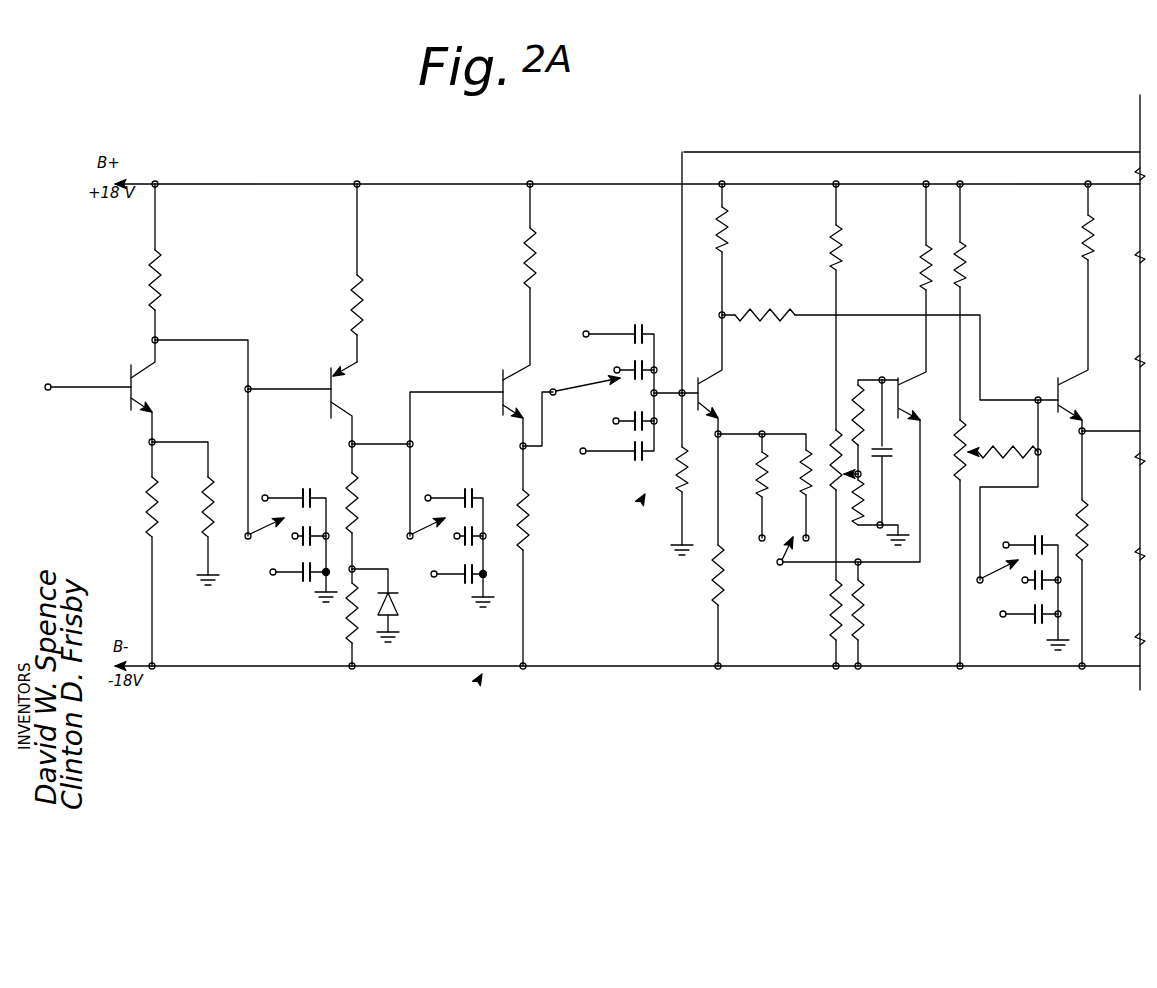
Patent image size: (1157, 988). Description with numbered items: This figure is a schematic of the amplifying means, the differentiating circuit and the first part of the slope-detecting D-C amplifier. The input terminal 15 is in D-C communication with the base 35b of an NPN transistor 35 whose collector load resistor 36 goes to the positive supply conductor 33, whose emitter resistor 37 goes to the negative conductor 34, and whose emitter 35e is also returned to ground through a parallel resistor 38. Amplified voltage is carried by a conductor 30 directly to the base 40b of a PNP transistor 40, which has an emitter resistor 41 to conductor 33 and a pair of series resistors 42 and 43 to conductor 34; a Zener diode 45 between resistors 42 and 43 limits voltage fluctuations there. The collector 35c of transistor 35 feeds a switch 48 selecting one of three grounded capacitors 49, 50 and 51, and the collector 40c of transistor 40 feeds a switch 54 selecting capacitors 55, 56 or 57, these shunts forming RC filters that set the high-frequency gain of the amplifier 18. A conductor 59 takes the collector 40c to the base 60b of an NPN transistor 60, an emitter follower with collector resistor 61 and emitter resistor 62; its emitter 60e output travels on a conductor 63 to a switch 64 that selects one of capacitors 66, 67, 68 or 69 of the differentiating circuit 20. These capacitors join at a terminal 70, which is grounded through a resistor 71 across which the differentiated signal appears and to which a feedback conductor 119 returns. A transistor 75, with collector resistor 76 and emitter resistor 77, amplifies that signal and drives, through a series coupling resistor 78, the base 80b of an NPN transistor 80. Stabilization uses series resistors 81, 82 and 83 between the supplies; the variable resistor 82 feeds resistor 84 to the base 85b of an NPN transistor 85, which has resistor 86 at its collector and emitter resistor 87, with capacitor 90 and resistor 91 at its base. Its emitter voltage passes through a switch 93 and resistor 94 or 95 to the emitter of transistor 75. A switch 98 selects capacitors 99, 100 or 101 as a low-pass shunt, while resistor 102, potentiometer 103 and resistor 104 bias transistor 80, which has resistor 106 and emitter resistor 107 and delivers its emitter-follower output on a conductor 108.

The input terminal 15 is at (48, 383).
The amplifier 18 is at (482, 674).
The differentiating circuit 20 is at (645, 494).
The conductor 30 is at (200, 340).
The conductor 33 is at (450, 184).
The conductor 34 is at (222, 668).
The NPN transistor 35 is at (137, 382).
The base 35b is at (106, 392).
The collector 35c is at (150, 368).
The emitter 35e is at (150, 410).
The collector load resistor 36 is at (162, 275).
The emitter resistor 37 is at (145, 520).
The parallel resistor 38 is at (200, 520).
The PNP transistor 40 is at (323, 385).
The base 40b is at (300, 388).
The collector 40c is at (345, 413).
The emitter resistor 41 is at (363, 300).
The series resistor 42 is at (357, 520).
The series resistor 43 is at (348, 620).
The Zener diode 45 is at (398, 605).
The switch 48 is at (262, 540).
The capacitor 49 is at (303, 492).
The capacitor 50 is at (305, 538).
The capacitor 51 is at (305, 578).
The switch 54 is at (430, 540).
The capacitor 55 is at (468, 490).
The capacitor 56 is at (476, 520).
The capacitor 57 is at (485, 590).
The conductor 59 is at (440, 390).
The NPN transistor 60 is at (487, 394).
The base 60b is at (496, 388).
The emitter 60e is at (500, 395).
The collector resistor 61 is at (540, 262).
The emitter resistor 62 is at (530, 530).
The conductor 63 is at (545, 412).
The switch 64 is at (590, 382).
The capacitor 66 is at (638, 328).
The capacitor 67 is at (638, 365).
The capacitor 68 is at (637, 432).
The capacitor 69 is at (638, 465).
The terminal 70 is at (684, 385).
The resistor 71 is at (695, 465).
The transistor 75 is at (712, 396).
The collector resistor 76 is at (730, 240).
The emitter resistor 77 is at (712, 600).
The series coupling resistor 78 is at (773, 322).
The NPN transistor 80 is at (1063, 345).
The base 80b is at (1036, 398).
The series resistor 81 is at (845, 248).
The variable resistor 82 is at (830, 440).
The series resistor 83 is at (830, 615).
The resistor 84 is at (855, 405).
The NPN transistor 85 is at (904, 357).
The base 85b is at (882, 377).
The resistor 86 is at (920, 270).
The emitter resistor 87 is at (865, 610).
The capacitor 90 is at (893, 457).
The resistor 91 is at (865, 500).
The switch 93 is at (778, 572).
The series resistor 94 is at (758, 462).
The series resistor 95 is at (802, 465).
The switch 98 is at (995, 585).
The capacitor 99 is at (1035, 540).
The capacitor 100 is at (1040, 598).
The capacitor 101 is at (1035, 625).
The resistor 102 is at (970, 268).
The potentiometer 103 is at (966, 440).
The resistor 104 is at (1010, 458).
The resistor 106 is at (1095, 258).
The emitter resistor 107 is at (1092, 530).
The conductor 108 is at (1110, 431).
The conductor 119 is at (1040, 152).